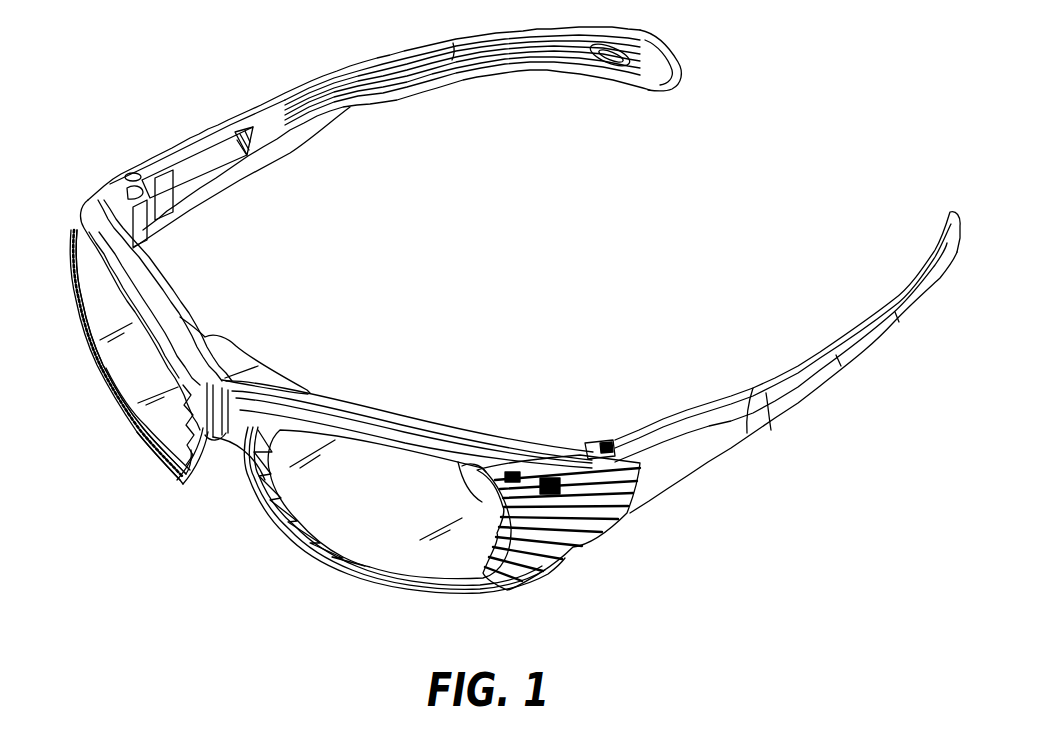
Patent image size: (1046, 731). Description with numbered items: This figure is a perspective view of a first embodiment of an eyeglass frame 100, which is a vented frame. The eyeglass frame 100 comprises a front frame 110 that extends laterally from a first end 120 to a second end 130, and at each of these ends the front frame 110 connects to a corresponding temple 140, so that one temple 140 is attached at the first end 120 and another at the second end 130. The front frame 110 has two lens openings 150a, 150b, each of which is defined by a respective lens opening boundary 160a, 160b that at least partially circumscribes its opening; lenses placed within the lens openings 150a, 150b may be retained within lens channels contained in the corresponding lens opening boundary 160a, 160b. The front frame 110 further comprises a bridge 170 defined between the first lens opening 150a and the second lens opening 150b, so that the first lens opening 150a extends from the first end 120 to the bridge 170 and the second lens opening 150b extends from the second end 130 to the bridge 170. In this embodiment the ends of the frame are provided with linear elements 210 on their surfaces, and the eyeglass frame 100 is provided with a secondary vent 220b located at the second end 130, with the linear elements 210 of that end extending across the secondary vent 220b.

The eyeglass frame 100 is at (153, 109).
The front frame 110 is at (147, 288).
The first end 120 is at (77, 238).
The second end 130 is at (573, 540).
The temple 140 is at (232, 120).
The first lens opening 150a is at (122, 363).
The second lens opening 150b is at (405, 555).
The lens opening boundary 160a is at (140, 447).
The lens opening boundary 160b is at (353, 577).
The bridge 170 is at (236, 383).
The linear elements 210 is at (462, 470).
The secondary vent 220b is at (540, 497).